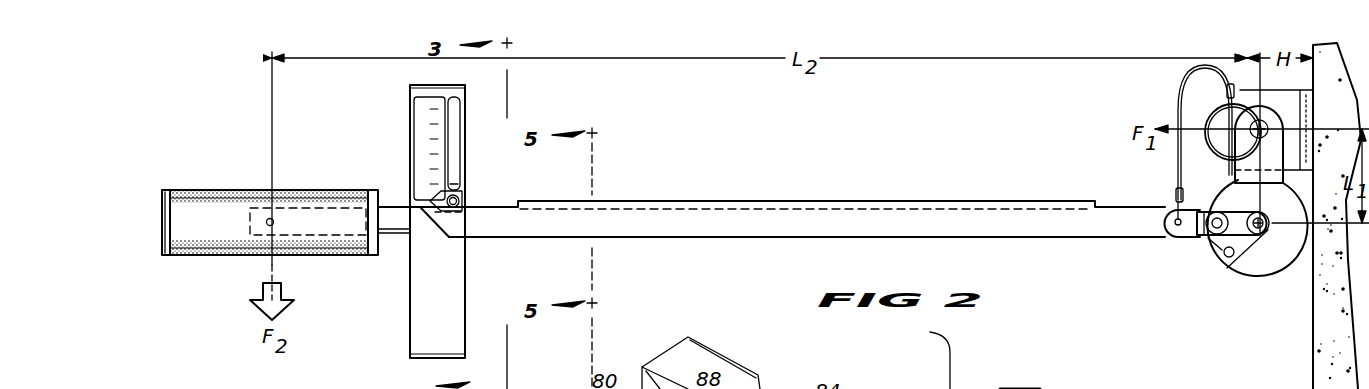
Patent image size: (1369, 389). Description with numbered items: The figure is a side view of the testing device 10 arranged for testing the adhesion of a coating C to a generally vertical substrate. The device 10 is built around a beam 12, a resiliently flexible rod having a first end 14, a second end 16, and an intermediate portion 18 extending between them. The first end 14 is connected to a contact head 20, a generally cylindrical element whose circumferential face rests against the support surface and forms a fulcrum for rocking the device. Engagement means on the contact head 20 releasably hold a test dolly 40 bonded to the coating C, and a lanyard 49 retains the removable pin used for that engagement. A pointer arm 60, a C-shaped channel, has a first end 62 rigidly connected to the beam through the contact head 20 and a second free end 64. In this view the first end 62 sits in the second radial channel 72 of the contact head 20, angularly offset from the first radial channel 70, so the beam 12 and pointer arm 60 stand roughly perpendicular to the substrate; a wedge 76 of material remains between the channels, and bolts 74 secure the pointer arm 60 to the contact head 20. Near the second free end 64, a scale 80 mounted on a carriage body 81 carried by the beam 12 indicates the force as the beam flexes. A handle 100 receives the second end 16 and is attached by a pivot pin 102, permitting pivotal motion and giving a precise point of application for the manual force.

The testing device 10 is at (242, 76).
The beam 12 is at (396, 224).
The first end 14 is at (1143, 187).
The second end 16 is at (265, 178).
The intermediate portion 18 is at (820, 198).
The contact head 20 is at (1284, 270).
The test dolly 40 is at (1236, 104).
The lanyard 49 is at (1176, 112).
The pointer arm 60 is at (693, 230).
The first end 62 is at (1168, 243).
The second free end 64 is at (476, 246).
The first radial channel 70 is at (1228, 258).
The second radial channel 72 is at (1240, 190).
The bolts 74 is at (1211, 214).
The wedge 76 is at (1212, 240).
The scale 80 is at (432, 97).
The carriage body 81 is at (420, 331).
The handle 100 is at (217, 195).
The pivot pin 102 is at (273, 221).
The coating C is at (1313, 365).